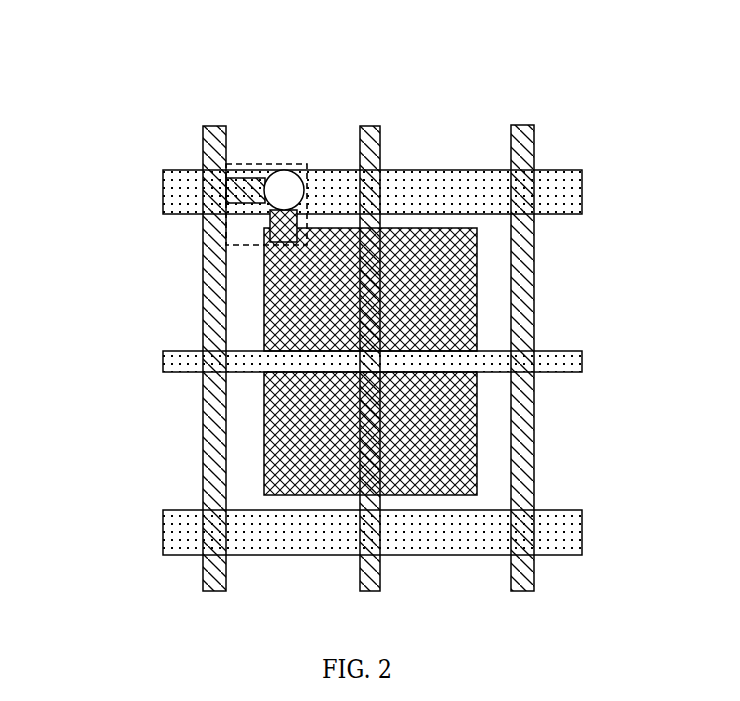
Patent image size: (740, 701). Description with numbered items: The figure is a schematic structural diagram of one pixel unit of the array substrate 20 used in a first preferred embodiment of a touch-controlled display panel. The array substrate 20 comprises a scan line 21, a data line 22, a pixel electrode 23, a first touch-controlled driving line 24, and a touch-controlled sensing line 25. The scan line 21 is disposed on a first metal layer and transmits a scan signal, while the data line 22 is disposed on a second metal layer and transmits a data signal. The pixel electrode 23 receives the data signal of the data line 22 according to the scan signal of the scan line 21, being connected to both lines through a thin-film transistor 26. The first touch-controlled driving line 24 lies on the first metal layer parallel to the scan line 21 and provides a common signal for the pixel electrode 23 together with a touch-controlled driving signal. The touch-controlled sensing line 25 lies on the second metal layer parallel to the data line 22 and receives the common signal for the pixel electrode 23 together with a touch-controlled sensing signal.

The array substrate 20 is at (357, 329).
The scan line 21 is at (570, 200).
The data line 22 is at (523, 296).
The pixel electrode 23 is at (470, 412).
The first touch-controlled driving line 24 is at (570, 356).
The touch-controlled sensing line 25 is at (372, 138).
The thin-film transistor 26 is at (268, 163).